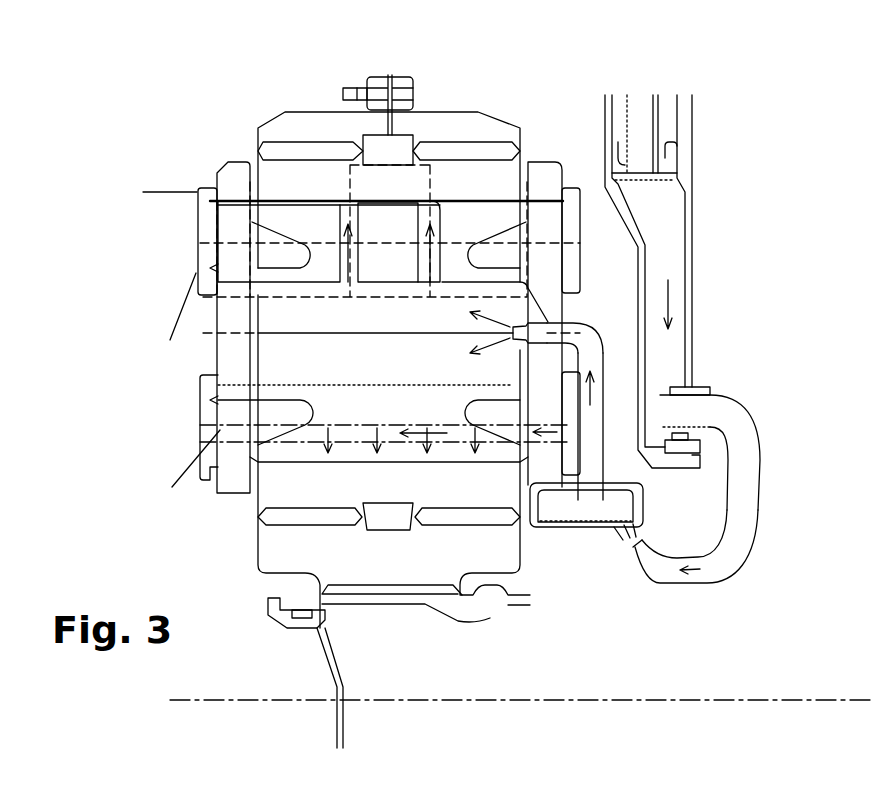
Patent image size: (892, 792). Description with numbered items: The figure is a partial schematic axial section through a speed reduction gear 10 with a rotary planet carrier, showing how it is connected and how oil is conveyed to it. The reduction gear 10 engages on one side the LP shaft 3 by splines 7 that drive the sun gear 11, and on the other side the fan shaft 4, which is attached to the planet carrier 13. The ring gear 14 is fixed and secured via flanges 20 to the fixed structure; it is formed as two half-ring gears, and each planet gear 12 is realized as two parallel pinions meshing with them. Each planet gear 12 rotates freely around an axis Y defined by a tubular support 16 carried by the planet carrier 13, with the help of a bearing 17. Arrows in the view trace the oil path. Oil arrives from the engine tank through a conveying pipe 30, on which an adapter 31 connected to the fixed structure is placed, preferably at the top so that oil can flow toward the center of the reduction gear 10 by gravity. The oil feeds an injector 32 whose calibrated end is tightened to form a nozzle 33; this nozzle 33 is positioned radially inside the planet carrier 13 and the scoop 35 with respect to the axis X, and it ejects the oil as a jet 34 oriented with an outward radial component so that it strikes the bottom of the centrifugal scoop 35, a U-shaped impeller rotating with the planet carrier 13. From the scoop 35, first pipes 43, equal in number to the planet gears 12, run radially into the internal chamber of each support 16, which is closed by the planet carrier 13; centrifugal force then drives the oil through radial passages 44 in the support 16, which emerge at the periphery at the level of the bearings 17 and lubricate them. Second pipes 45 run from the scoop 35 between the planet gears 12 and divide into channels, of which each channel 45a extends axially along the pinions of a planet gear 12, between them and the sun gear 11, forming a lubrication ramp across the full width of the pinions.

The LP shaft 3 is at (485, 607).
The fan shaft 4 is at (168, 208).
The splines 7 is at (380, 597).
The reduction gear 10 is at (236, 80).
The sun gear 11 is at (283, 542).
The planet gear 12 is at (510, 172).
The planet carrier 13 is at (233, 180).
The ring gear 14 is at (500, 133).
The tubular support 16 is at (385, 257).
The bearing 17 is at (307, 190).
The flanges 20 is at (388, 76).
The conveying pipe 30 is at (667, 115).
The adapter 31 is at (663, 227).
The injector 32 is at (745, 455).
The nozzle 33 is at (642, 568).
The jet 34 is at (613, 536).
The centrifugal scoop 35 is at (648, 518).
The first pipes 43 is at (580, 318).
The passages 44 is at (340, 288).
The second pipes 45 is at (570, 423).
The channel 45a is at (350, 424).
The axis of rotation X is at (205, 702).
The axis of the planet gear Y is at (204, 333).